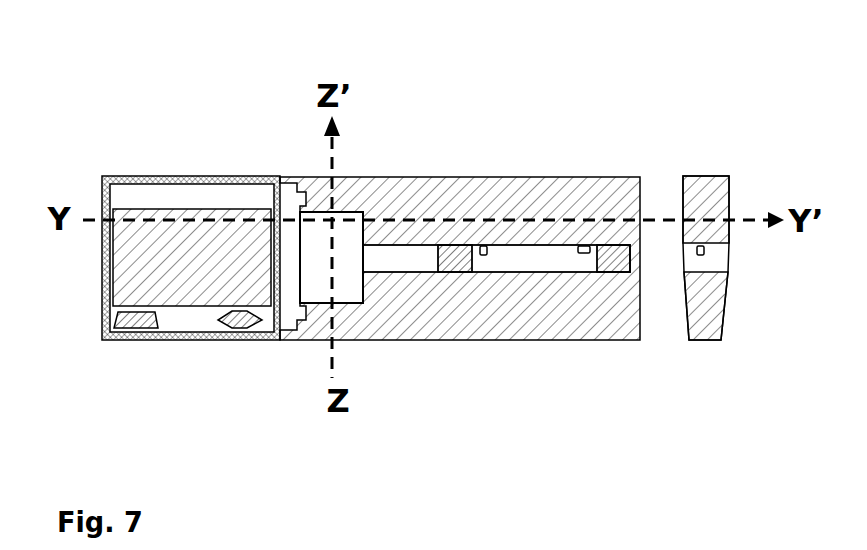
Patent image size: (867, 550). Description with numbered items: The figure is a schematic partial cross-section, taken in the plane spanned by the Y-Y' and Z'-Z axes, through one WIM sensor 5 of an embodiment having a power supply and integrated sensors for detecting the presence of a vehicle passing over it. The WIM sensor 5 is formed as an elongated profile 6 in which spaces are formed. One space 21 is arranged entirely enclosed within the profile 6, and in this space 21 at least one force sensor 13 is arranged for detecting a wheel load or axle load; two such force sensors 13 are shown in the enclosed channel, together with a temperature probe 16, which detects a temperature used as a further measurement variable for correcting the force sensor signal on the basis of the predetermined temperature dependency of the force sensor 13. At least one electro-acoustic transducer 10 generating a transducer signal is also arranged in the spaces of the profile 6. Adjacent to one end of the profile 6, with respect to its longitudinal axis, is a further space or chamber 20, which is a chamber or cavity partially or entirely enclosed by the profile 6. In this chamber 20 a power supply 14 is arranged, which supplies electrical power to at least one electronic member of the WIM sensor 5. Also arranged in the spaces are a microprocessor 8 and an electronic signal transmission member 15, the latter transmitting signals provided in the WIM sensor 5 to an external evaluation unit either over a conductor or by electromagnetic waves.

The WIM sensor 5 is at (284, 119).
The profile 6 is at (393, 318).
The microprocessor 8 is at (238, 325).
The electro-acoustic transducer 10 is at (483, 247).
The force sensor 13 is at (456, 265).
The power supply 14 is at (186, 290).
The electronic signal transmission member 15 is at (135, 328).
The temperature probe 16 is at (583, 247).
The space 20 is at (168, 202).
The space 21 is at (510, 268).